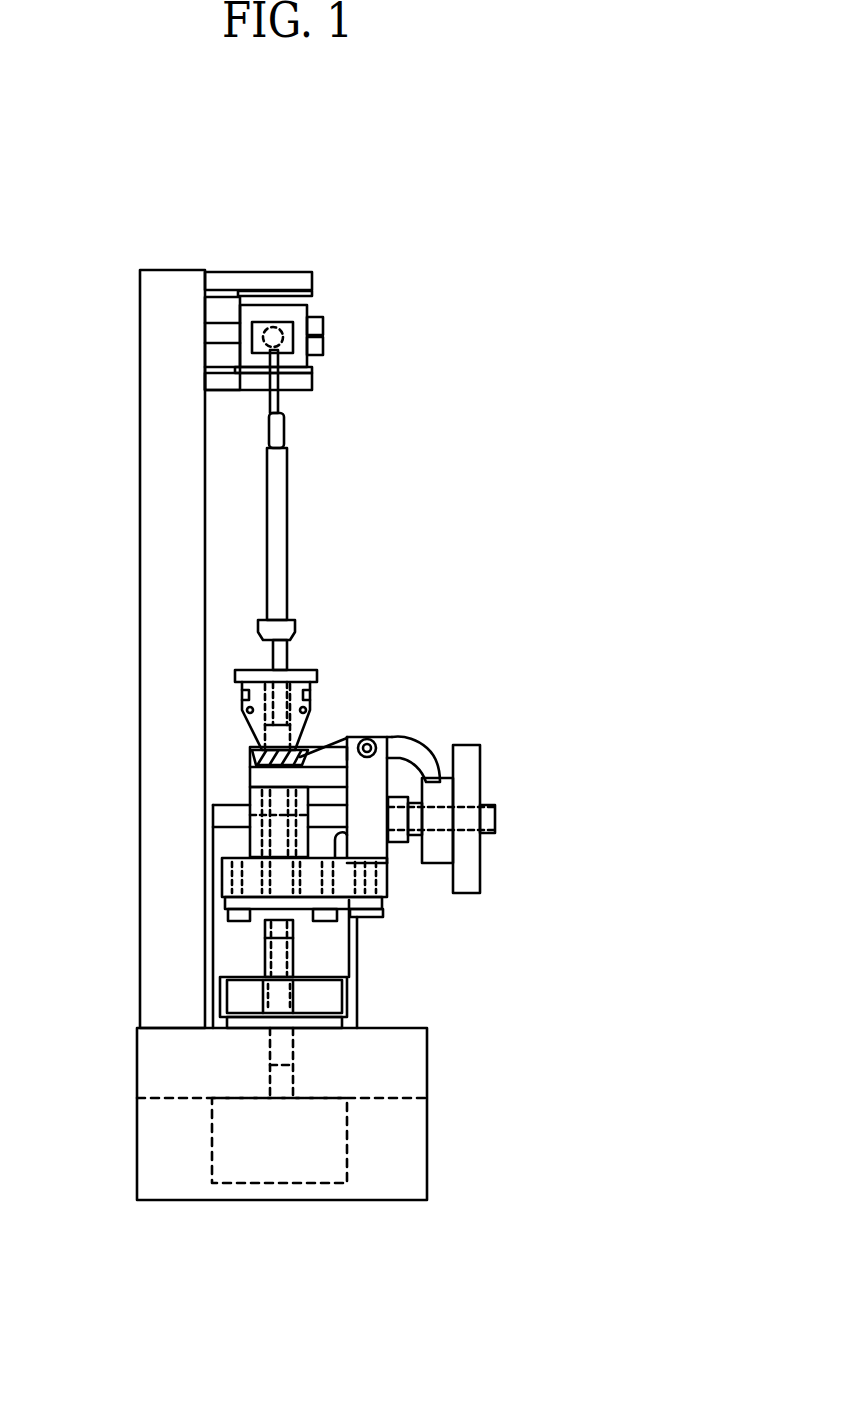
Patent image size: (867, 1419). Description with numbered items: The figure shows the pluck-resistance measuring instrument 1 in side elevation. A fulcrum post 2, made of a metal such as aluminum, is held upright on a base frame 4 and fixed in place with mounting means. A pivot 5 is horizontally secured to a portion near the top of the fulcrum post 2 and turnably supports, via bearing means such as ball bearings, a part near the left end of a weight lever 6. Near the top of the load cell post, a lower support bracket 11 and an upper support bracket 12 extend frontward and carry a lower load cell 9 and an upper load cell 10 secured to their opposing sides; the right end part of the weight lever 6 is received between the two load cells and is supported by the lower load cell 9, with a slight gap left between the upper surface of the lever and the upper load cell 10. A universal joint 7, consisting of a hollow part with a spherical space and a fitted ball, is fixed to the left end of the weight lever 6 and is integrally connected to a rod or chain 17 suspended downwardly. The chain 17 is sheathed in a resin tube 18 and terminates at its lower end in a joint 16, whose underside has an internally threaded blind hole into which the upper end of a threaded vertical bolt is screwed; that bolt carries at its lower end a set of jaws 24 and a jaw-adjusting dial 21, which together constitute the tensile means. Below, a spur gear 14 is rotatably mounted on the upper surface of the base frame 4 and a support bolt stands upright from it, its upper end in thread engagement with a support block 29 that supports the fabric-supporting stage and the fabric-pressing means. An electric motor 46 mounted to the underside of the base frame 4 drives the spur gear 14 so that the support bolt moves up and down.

The material testing machine 1 is at (470, 556).
The fulcrum post 2 is at (139, 766).
The base frame 4 is at (429, 1078).
The pivot 5 is at (218, 325).
The weight lever 6 is at (323, 333).
The universal joint 7 is at (323, 350).
The lower load cell 9 is at (312, 368).
The upper load cell 10 is at (312, 297).
The lower support bracket 11 is at (252, 390).
The upper support bracket 12 is at (293, 270).
The spur gear 14 is at (347, 993).
The joint 16 is at (295, 640).
The rod or chain 17 is at (284, 440).
The resin tube 18 is at (287, 505).
The jaw-adjusting dial 21 is at (320, 678).
The set of jaws 24 is at (318, 712).
The support block 29 is at (390, 892).
The electric motor 46 is at (255, 1185).